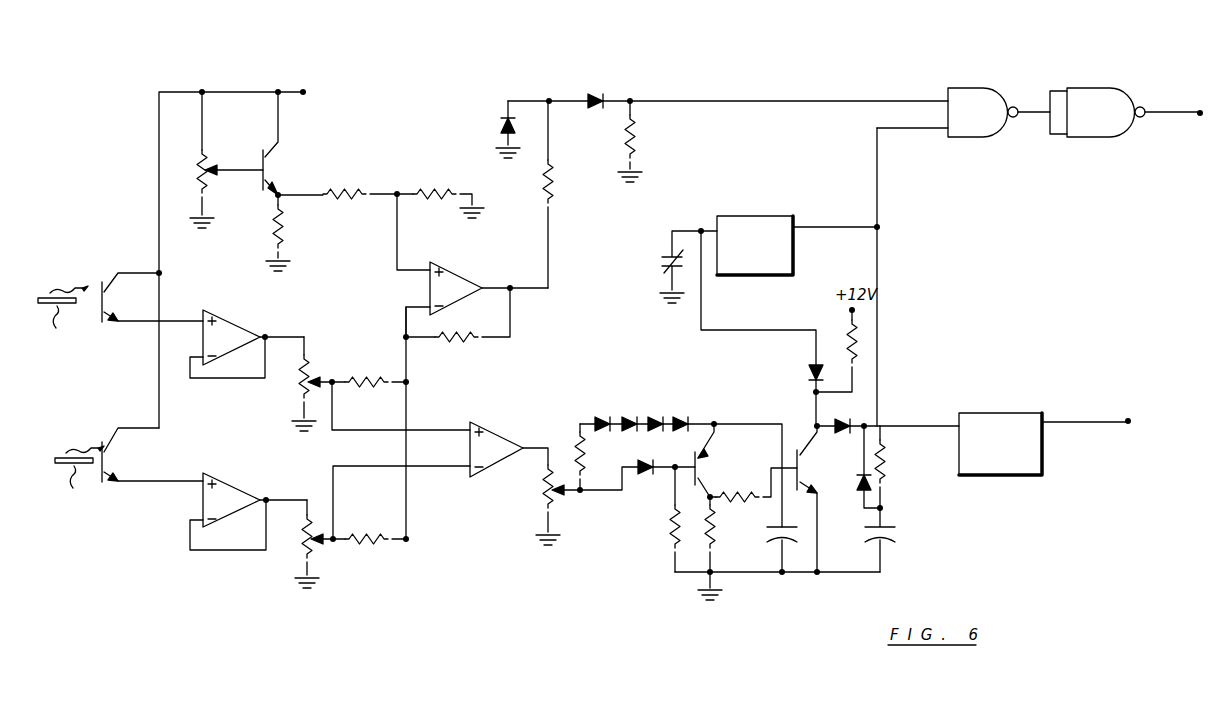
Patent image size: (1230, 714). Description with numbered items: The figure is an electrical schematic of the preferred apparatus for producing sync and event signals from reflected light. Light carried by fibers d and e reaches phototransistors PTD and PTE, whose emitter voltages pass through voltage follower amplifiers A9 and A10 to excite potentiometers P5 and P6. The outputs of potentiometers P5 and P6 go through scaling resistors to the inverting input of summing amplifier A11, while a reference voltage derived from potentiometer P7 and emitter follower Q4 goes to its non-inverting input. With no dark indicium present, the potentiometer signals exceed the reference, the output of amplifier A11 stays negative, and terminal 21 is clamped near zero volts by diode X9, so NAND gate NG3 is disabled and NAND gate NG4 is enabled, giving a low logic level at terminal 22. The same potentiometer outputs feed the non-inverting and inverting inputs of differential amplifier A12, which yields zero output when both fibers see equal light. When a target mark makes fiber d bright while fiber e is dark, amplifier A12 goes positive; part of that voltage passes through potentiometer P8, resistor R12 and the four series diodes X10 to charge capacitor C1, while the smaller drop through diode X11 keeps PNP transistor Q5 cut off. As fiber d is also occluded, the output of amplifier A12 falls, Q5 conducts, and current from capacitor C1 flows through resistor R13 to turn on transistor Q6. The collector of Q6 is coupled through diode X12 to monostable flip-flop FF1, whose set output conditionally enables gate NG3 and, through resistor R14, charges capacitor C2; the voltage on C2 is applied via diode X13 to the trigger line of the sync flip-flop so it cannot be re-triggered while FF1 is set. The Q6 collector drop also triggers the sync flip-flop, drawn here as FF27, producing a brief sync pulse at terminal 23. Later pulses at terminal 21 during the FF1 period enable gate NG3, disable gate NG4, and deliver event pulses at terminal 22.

The potentiometer P7 is at (226, 160).
The emitter follower Q4 is at (278, 181).
The summing amplifier A11 is at (461, 280).
The terminal 21 is at (549, 97).
The diode X9 is at (494, 129).
The NAND gate NG3 is at (963, 246).
The NAND gate NG4 is at (1125, 101).
The output terminal 22 is at (1200, 112).
The monostable flip-flop FF1 is at (775, 216).
The diode X12 is at (795, 395).
The phototransistor PTD is at (120, 300).
The phototransistor PTE is at (129, 458).
The fiber d is at (47, 331).
The fiber e is at (64, 495).
The voltage follower amplifier A9 is at (242, 331).
The voltage follower amplifier A10 is at (239, 494).
The differential amplifier A12 is at (509, 441).
The potentiometer P5 is at (308, 384).
The potentiometer P6 is at (308, 544).
The potentiometer P8 is at (561, 505).
The resistor R12 is at (596, 457).
The series diodes X10 is at (648, 414).
The diode X11 is at (637, 476).
The PNP transistor Q5 is at (711, 462).
The resistor R13 is at (753, 496).
The capacitor C1 is at (773, 549).
The transistor Q6 is at (812, 497).
The diode X13 is at (855, 468).
The resistor R14 is at (896, 467).
The capacitor C2 is at (870, 540).
The flip-flop FF27 is at (1016, 419).
The terminal 23 is at (1128, 420).